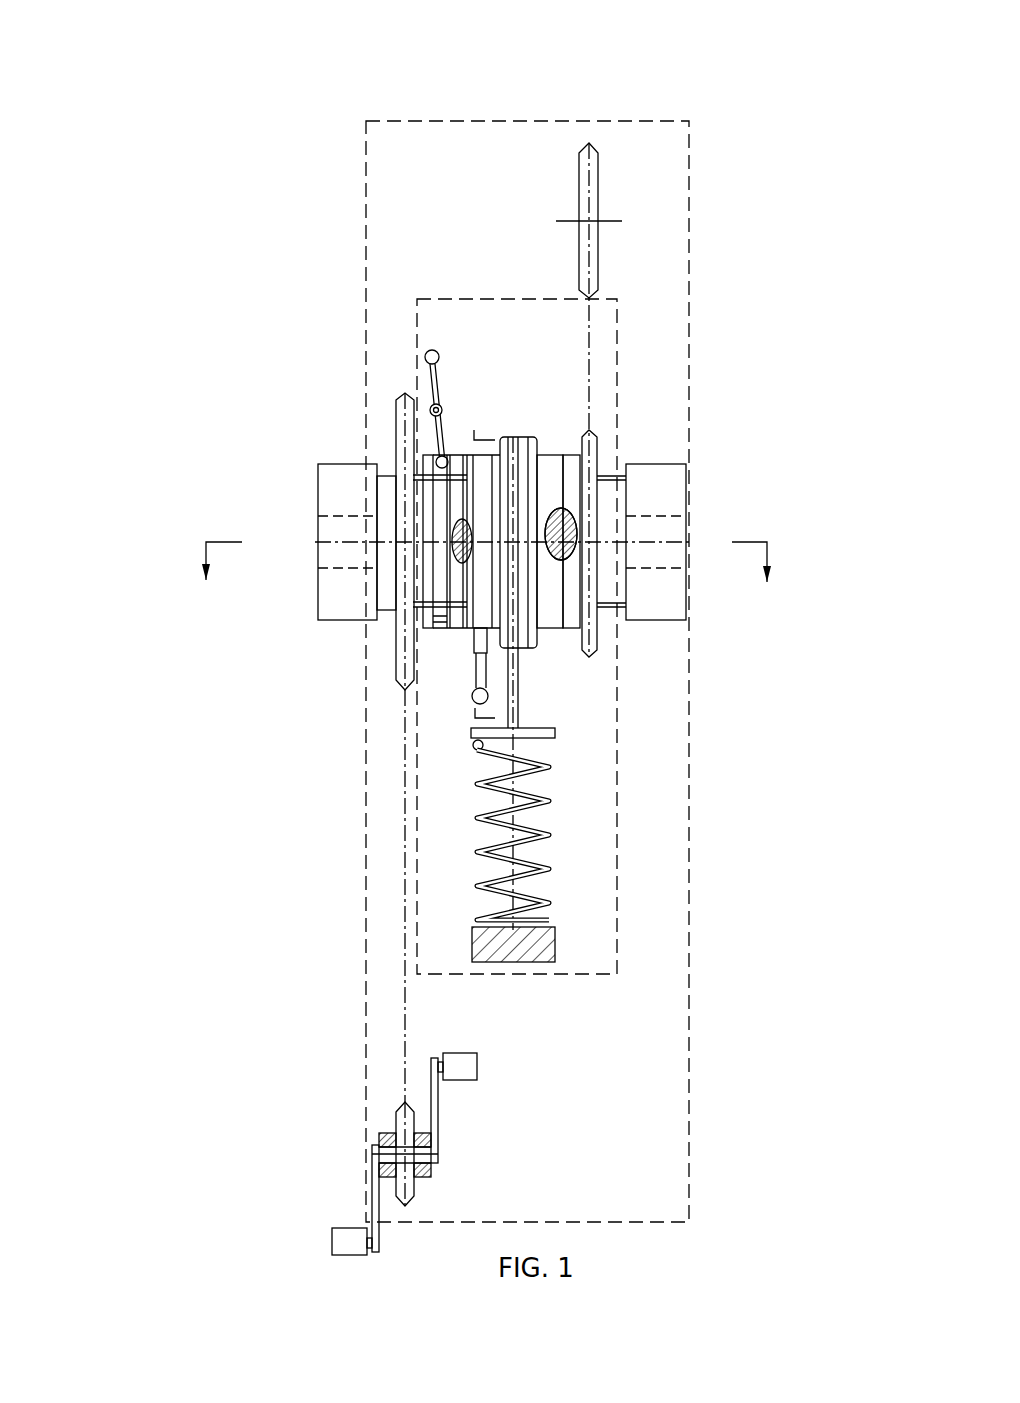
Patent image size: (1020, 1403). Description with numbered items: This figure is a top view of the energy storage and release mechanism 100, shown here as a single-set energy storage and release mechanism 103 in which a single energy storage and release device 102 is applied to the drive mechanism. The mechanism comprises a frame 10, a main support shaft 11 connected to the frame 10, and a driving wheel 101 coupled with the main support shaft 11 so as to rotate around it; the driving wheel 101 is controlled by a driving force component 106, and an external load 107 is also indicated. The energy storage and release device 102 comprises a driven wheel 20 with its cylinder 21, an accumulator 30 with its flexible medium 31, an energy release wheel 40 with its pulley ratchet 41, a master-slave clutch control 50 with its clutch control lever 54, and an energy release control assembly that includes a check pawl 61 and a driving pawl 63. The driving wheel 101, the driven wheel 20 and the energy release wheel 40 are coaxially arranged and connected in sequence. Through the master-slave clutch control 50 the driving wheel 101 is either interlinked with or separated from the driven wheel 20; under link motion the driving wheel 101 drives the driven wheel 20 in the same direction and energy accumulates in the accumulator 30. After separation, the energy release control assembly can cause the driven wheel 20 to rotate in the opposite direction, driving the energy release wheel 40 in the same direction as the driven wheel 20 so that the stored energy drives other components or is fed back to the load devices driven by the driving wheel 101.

The energy storage and release mechanism 100 is at (223, 145).
The frame 10 is at (345, 482).
The main support shaft 11 is at (328, 535).
The driven wheel 20 is at (513, 463).
The cylinder 21 is at (445, 620).
The accumulator 30 is at (547, 820).
The flexible medium 31 is at (520, 690).
The energy release wheel 40 is at (582, 450).
The pulley ratchet 41 is at (563, 508).
The master-slave clutch control 50 is at (460, 515).
The clutch control lever 54 is at (430, 393).
The check pawl 61 is at (473, 682).
The driving pawl 63 is at (567, 540).
The driving wheel 101 is at (400, 463).
The energy storage and release device 102 is at (503, 295).
The single-set energy storage and release mechanism 103 is at (538, 120).
The driving force component 106 is at (452, 1152).
The external load 107 is at (618, 228).